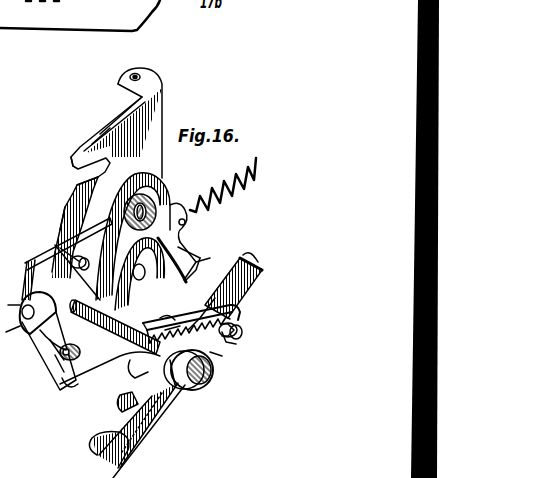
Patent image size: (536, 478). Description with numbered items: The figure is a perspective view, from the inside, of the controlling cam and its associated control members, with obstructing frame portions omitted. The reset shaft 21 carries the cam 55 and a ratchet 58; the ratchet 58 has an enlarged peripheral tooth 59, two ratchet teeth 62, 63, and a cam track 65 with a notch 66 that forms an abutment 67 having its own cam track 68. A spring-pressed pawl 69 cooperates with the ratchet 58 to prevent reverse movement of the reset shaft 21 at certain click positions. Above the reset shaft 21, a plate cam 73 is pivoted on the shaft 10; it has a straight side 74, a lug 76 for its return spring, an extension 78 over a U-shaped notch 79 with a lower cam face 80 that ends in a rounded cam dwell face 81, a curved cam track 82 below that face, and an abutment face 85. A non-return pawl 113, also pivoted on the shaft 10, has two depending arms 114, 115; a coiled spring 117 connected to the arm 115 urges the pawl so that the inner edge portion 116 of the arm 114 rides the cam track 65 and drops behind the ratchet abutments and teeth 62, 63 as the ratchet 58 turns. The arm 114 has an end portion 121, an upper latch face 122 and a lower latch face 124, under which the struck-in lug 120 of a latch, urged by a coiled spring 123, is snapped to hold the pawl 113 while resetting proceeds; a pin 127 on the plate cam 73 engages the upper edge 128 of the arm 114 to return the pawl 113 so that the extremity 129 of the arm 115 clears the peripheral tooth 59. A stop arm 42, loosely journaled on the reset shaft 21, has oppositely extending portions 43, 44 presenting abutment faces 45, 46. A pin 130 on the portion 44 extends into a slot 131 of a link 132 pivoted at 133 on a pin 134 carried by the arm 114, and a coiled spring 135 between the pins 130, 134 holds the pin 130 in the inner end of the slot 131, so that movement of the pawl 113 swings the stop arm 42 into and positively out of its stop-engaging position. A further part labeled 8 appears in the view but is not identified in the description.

The straight side 74 is at (169, 124).
The lug 76 is at (140, 74).
The plate cam 73 is at (136, 114).
The U-shaped notch 79 is at (90, 142).
The extension 78 is at (72, 160).
The lower cam face 80 is at (80, 182).
The cam dwell face 81 is at (66, 208).
The ratchet tooth 63 is at (158, 218).
The shaft 10 is at (147, 213).
The abutment face 85 is at (134, 252).
The non-return pawl 113 is at (177, 207).
The coiled spring 117 is at (226, 188).
The arm 115 is at (188, 252).
The ratchet tooth 62 is at (194, 258).
The extremity 129 is at (204, 262).
The oppositely extending portion 44 is at (250, 282).
The abutment face 46 is at (252, 258).
The coiled spring 135 is at (216, 296).
The cam 55 is at (163, 296).
The ratchet 58 is at (170, 312).
The peripheral tooth 59 is at (172, 324).
The slot 131 is at (240, 328).
The pin 130 is at (230, 338).
The reset shaft 21 is at (210, 380).
The link 132 is at (216, 358).
The stop arm 42 is at (188, 398).
The oppositely extending portion 43 is at (158, 447).
The abutment face 45 is at (108, 455).
The pivot 133 is at (144, 374).
The pawl 69 is at (120, 399).
The pin 134 is at (108, 300).
The upper edge 128 is at (40, 257).
The pin 127 is at (66, 253).
The arm 114 is at (82, 256).
The curved cam track 82 is at (26, 272).
The lower latch face 124 is at (62, 276).
The upper latch face 122 is at (50, 295).
The end portion 121 is at (36, 345).
The inner edge portion 116 is at (60, 358).
The struck-in lug 120 is at (52, 353).
The cam track 65 is at (64, 363).
The notch 66 is at (60, 375).
The abutment 67 is at (70, 387).
The cam track 68 is at (100, 373).
The coiled spring 123 is at (10, 300).
The frame 8 is at (10, 332).